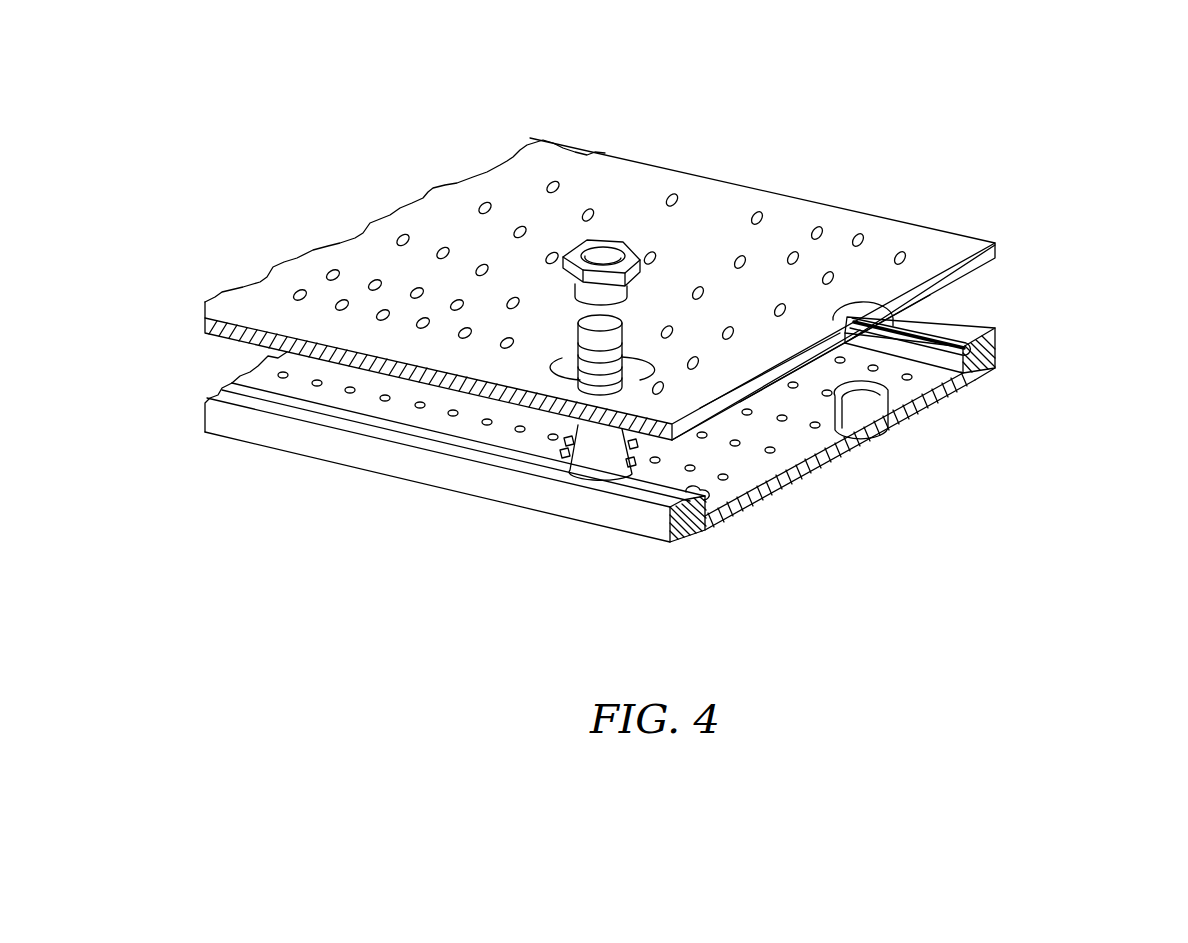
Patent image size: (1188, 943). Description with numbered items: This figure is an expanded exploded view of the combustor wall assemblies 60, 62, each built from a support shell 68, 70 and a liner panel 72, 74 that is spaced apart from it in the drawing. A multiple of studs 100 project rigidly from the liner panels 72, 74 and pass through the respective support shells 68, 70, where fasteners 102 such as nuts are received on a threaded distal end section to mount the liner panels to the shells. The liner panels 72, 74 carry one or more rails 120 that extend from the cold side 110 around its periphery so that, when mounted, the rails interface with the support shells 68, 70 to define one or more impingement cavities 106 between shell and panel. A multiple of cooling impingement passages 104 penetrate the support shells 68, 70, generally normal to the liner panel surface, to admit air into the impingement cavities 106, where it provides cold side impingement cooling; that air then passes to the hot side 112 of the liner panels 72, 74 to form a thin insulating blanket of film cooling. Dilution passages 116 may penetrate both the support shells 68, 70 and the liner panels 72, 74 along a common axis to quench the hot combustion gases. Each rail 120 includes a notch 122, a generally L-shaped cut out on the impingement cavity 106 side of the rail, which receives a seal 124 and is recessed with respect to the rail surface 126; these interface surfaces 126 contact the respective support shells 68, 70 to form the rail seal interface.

The combustor wall assembly 60 is at (943, 110).
The combustor wall assembly 62 is at (686, 326).
The support shell 68 is at (664, 289).
The support shell 70 is at (798, 210).
The liner panel 72 is at (686, 447).
The liner panel 74 is at (1013, 388).
The stud 100 is at (620, 322).
The fastener 102 is at (616, 243).
The cooling impingement passage 104 is at (405, 238).
The impingement cavity 106 is at (1032, 262).
The cold side 110 is at (747, 463).
The hot side 112 is at (725, 520).
The dilution passage 116 is at (872, 300).
The rail 120 is at (425, 460).
The notch 122 is at (975, 380).
The seal 124 is at (953, 333).
The rail surface 126 is at (982, 328).